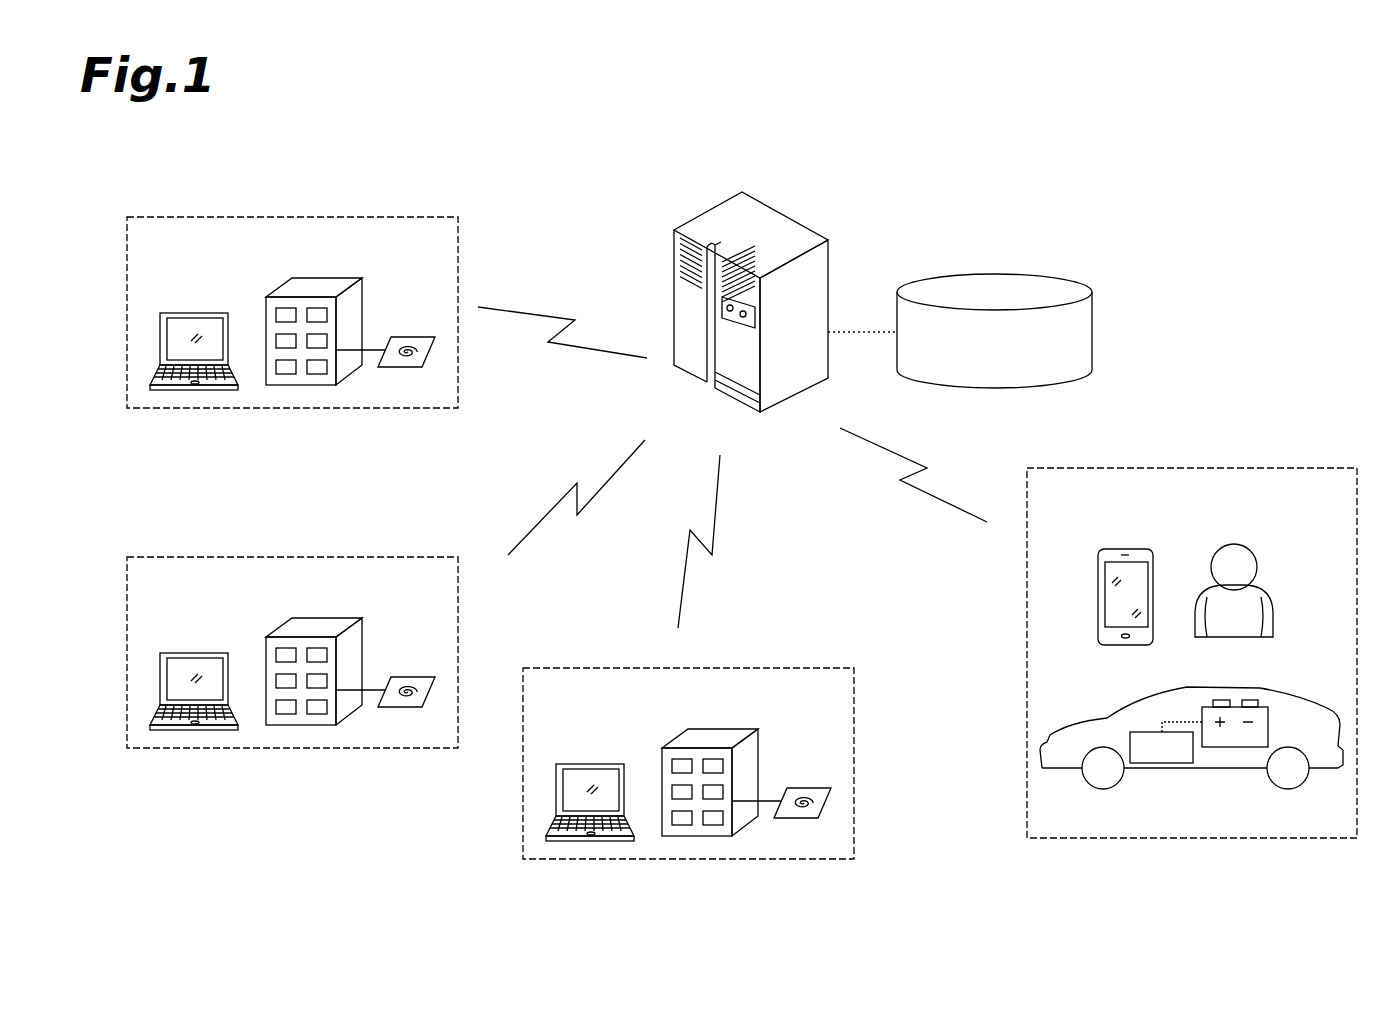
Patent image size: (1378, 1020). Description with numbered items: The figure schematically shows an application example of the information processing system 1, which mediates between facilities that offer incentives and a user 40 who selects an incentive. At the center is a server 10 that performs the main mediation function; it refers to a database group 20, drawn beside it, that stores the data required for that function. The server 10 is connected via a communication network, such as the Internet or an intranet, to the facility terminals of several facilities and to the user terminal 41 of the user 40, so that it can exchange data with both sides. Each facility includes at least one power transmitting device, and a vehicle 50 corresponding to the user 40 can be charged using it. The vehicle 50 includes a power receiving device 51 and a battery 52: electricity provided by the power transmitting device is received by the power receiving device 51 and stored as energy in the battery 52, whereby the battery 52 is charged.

The information processing system 1 is at (705, 207).
The server 10 is at (751, 282).
The database group 20 is at (1048, 274).
The user 40 is at (1267, 592).
The user terminal 41 is at (1135, 548).
The vehicle 50 is at (1193, 739).
The power receiving device 51 is at (1170, 765).
The battery 52 is at (1248, 747).